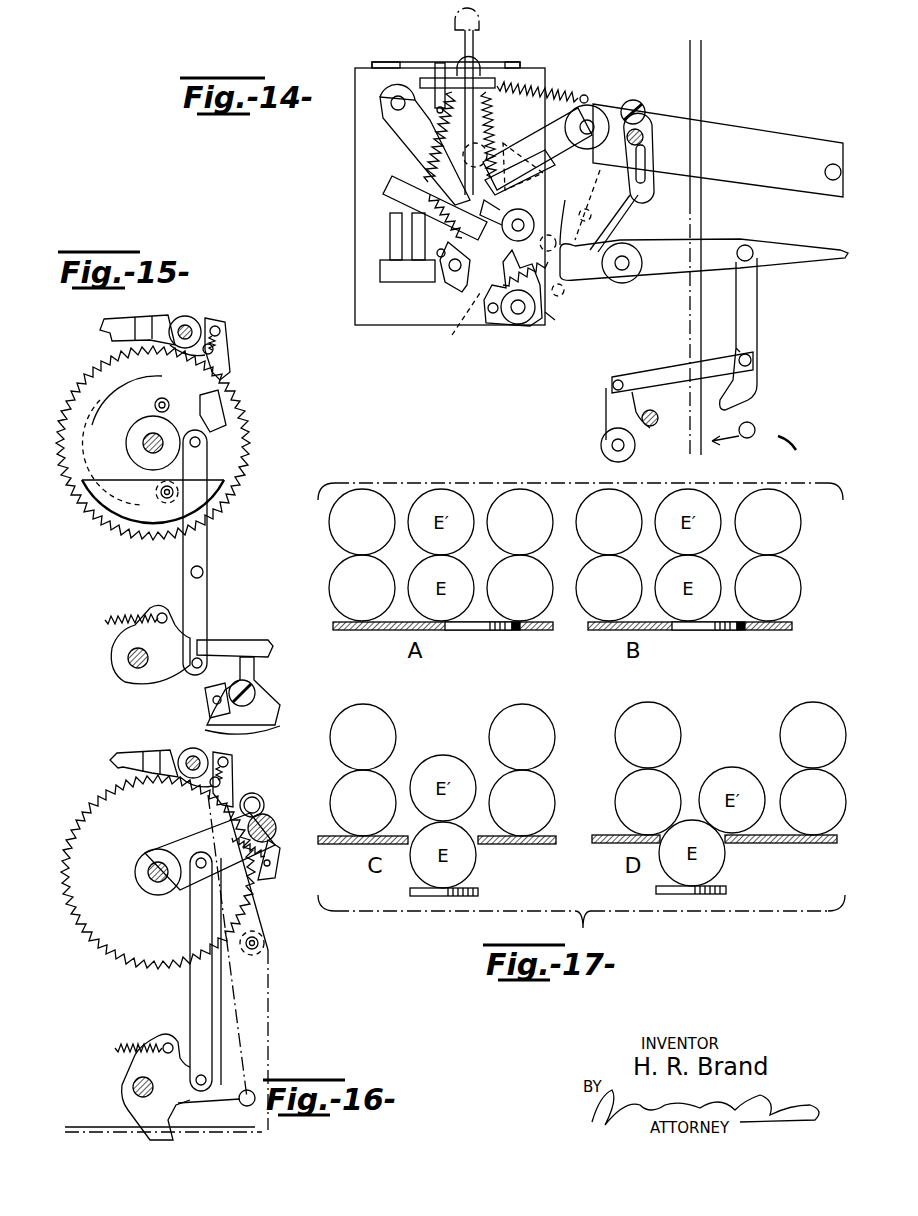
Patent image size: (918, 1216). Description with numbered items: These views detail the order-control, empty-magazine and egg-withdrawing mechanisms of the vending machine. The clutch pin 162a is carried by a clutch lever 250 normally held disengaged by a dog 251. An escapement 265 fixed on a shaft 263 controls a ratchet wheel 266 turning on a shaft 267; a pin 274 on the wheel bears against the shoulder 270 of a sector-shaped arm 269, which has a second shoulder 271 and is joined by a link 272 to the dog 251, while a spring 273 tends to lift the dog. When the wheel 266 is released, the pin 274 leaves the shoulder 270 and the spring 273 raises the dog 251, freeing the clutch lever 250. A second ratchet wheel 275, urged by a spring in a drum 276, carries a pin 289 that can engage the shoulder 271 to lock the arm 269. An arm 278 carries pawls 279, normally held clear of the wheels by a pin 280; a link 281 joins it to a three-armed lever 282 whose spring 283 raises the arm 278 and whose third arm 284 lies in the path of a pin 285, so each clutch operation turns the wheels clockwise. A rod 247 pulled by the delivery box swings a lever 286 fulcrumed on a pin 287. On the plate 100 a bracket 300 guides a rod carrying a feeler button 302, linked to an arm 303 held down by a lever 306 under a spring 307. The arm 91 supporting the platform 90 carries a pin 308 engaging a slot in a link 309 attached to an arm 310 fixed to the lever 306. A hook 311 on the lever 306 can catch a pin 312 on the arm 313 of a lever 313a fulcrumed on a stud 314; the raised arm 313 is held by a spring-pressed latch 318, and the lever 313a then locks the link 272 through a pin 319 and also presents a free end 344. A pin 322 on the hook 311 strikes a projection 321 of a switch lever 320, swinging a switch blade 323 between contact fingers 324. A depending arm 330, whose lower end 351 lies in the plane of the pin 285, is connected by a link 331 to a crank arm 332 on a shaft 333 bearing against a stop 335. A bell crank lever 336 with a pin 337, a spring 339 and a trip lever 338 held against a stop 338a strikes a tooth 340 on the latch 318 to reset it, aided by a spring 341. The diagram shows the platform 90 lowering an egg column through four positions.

In FIG. 14, the arm 91 is at (718, 150).
In FIG. 14, the plate 100 is at (355, 230).
In FIG. 15, the clutch pin 162a is at (210, 715).
In FIG. 16, the rod 247 is at (262, 1132).
In FIG. 15, the clutch lever 250 is at (256, 674).
In FIG. 15, the dog 251 is at (255, 640).
In FIG. 15, the shaft 263 is at (219, 328).
In FIG. 16, the shaft 263 is at (232, 764).
In FIG. 15, the escapement 265 is at (190, 317).
In FIG. 16, the escapement 265 is at (112, 760).
In FIG. 15, the ratchet wheel 266 is at (245, 418).
In FIG. 16, the ratchet wheel 266 is at (125, 966).
In FIG. 15, the shaft 267 is at (143, 443).
In FIG. 16, the shaft 267 is at (150, 880).
In FIG. 15, the sector shaped arm 269 is at (190, 400).
In FIG. 15, the shoulder 270 is at (160, 414).
In FIG. 15, the shoulder 271 is at (208, 392).
In FIG. 15, the link 272 is at (210, 530).
In FIG. 15, the spring 273 is at (152, 612).
In FIG. 15, the pin 274 is at (156, 400).
In FIG. 15, the second ratchet wheel 275 is at (135, 538).
In FIG. 15, the drum 276 is at (108, 516).
In FIG. 15, the arm 278 is at (238, 450).
In FIG. 16, the arm 278 is at (186, 846).
In FIG. 16, the pawls 279 is at (262, 878).
In FIG. 16, the pin 280 is at (257, 806).
In FIG. 16, the link bar 281 is at (198, 990).
In FIG. 16, the three armed lever 282 is at (135, 1103).
In FIG. 16, the spring 283 is at (140, 1044).
In FIG. 16, the third arm 284 is at (191, 1124).
In FIG. 14, the pin 285 is at (754, 428).
In FIG. 16, the pin 285 is at (252, 1092).
In FIG. 16, the lever 286 is at (270, 1022).
In FIG. 16, the pin 287 is at (265, 946).
In FIG. 15, the pin 289 is at (165, 500).
In FIG. 14, the bracket 300 is at (428, 82).
In FIG. 14, the feeler button 302 is at (476, 70).
In FIG. 14, the arm 303 is at (470, 160).
In FIG. 14, the lever 306 is at (522, 122).
In FIG. 14, the spring 307 is at (566, 92).
In FIG. 14, the pin 308 is at (647, 120).
In FIG. 14, the link 309 is at (632, 190).
In FIG. 14, the arm 310 is at (607, 100).
In FIG. 14, the hook 311 is at (578, 230).
In FIG. 14, the pin 312 is at (560, 293).
In FIG. 14, the arm 313 is at (602, 272).
In FIG. 14, the lever 313a is at (666, 272).
In FIG. 14, the stud 314 is at (625, 260).
In FIG. 14, the spring pressed latch 318 is at (485, 312).
In FIG. 15, the pin 319 is at (204, 572).
In FIG. 14, the switch lever 320 is at (504, 229).
In FIG. 14, the projection 321 is at (533, 247).
In FIG. 14, the pin 322 is at (600, 206).
In FIG. 14, the switch blade 323 is at (392, 183).
In FIG. 14, the contact fingers 324 is at (418, 245).
In FIG. 14, the depending arm 330 is at (748, 320).
In FIG. 14, the link 331 is at (657, 368).
In FIG. 14, the crank arm 332 is at (606, 409).
In FIG. 14, the shaft 333 is at (612, 446).
In FIG. 14, the pin 335 is at (652, 426).
In FIG. 15, the pin 335 is at (138, 658).
In FIG. 16, the pin 335 is at (133, 1087).
In FIG. 14, the bell crank lever 336 is at (392, 122).
In FIG. 14, the pin 337 is at (440, 66).
In FIG. 14, the trip lever 338 is at (458, 298).
In FIG. 14, the stop 338a is at (438, 256).
In FIG. 14, the spring 339 is at (438, 146).
In FIG. 14, the tooth 340 is at (459, 318).
In FIG. 14, the spring 341 is at (545, 314).
In FIG. 14, the free end 344 is at (818, 251).
In FIG. 14, the hook 351 is at (742, 405).
In FIG. 17, the platform 90 is at (474, 632).